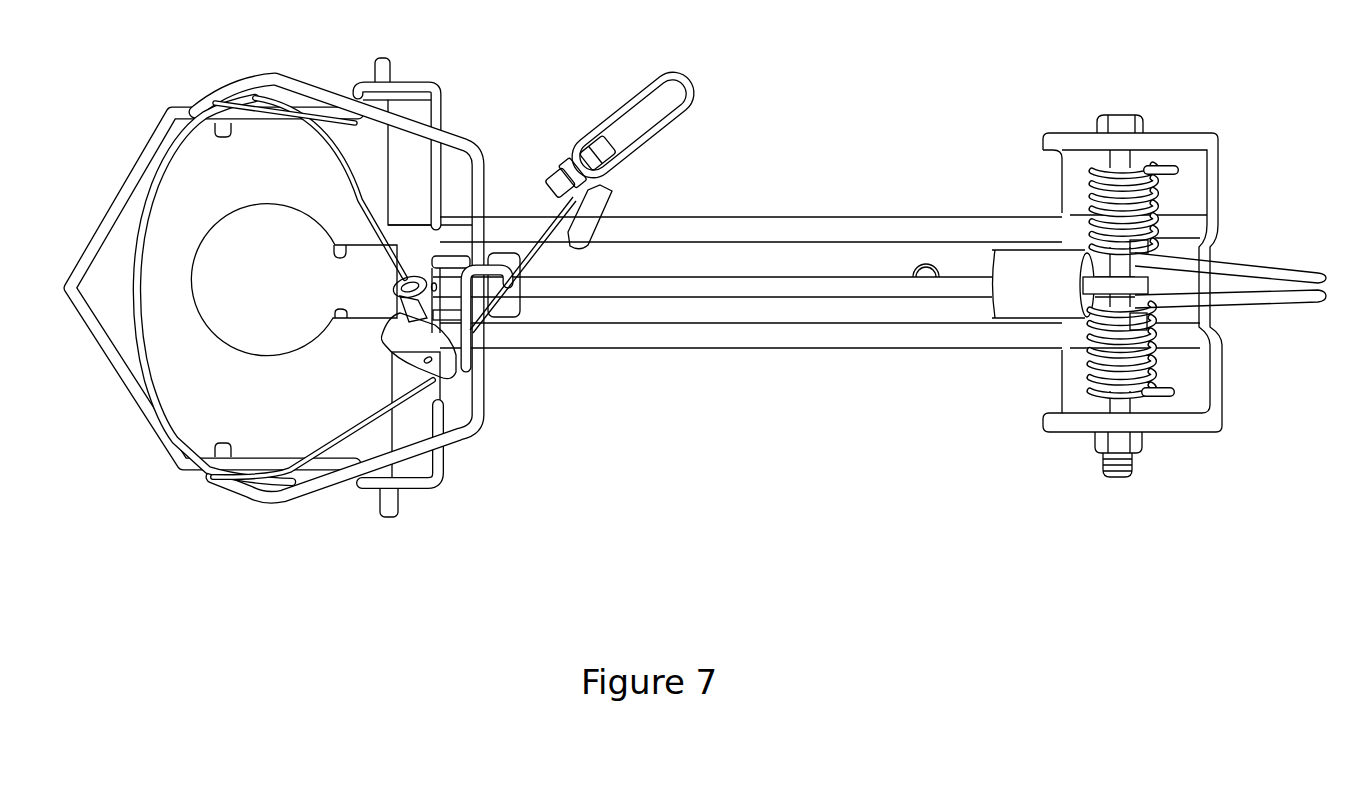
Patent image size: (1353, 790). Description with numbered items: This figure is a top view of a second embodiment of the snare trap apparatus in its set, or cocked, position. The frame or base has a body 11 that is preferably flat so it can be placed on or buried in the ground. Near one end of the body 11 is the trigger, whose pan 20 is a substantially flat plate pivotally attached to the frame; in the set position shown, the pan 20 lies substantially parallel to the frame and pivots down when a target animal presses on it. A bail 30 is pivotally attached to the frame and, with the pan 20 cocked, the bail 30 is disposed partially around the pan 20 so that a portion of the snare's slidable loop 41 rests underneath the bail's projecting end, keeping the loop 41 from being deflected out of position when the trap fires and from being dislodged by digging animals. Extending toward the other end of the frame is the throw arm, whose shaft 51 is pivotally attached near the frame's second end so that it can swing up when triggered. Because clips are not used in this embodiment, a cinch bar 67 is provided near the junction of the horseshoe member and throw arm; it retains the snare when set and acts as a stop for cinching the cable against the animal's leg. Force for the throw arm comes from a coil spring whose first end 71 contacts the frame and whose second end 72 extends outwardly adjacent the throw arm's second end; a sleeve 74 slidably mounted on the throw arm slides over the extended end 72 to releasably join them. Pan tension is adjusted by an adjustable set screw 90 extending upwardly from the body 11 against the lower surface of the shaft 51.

The body 11 is at (770, 345).
The pan 20 is at (288, 340).
The bail 30 is at (110, 358).
The slidable loop 41 is at (148, 193).
The shaft 51 is at (790, 283).
The cinch bar 67 is at (470, 345).
The first end of spring 71 is at (1165, 165).
The second end of spring 72 is at (1284, 292).
The sleeve 74 is at (1012, 300).
The adjustable set screw 90 is at (928, 268).